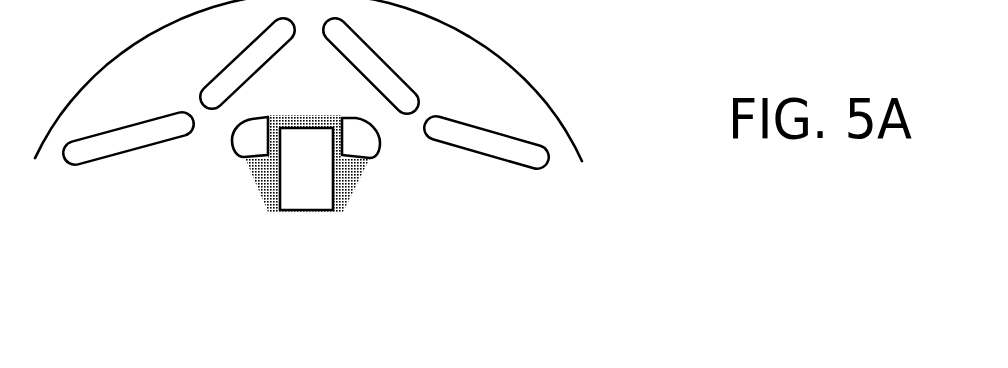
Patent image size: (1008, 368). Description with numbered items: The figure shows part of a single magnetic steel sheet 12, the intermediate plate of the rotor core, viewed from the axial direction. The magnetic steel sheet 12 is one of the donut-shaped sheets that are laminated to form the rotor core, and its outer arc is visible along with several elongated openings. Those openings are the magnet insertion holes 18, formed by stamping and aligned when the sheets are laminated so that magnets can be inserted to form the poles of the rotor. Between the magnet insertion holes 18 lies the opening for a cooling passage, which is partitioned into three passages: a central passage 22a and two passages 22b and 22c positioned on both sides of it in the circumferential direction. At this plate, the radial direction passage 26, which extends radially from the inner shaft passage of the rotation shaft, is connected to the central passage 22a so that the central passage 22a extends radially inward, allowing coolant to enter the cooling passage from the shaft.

The magnetic steel sheet 12 is at (480, 60).
The magnet insertion hole 18 is at (519, 140).
The central passage 22a is at (300, 156).
The passage 22b is at (253, 138).
The passage 22c is at (363, 138).
The radial direction passage 26 is at (295, 195).